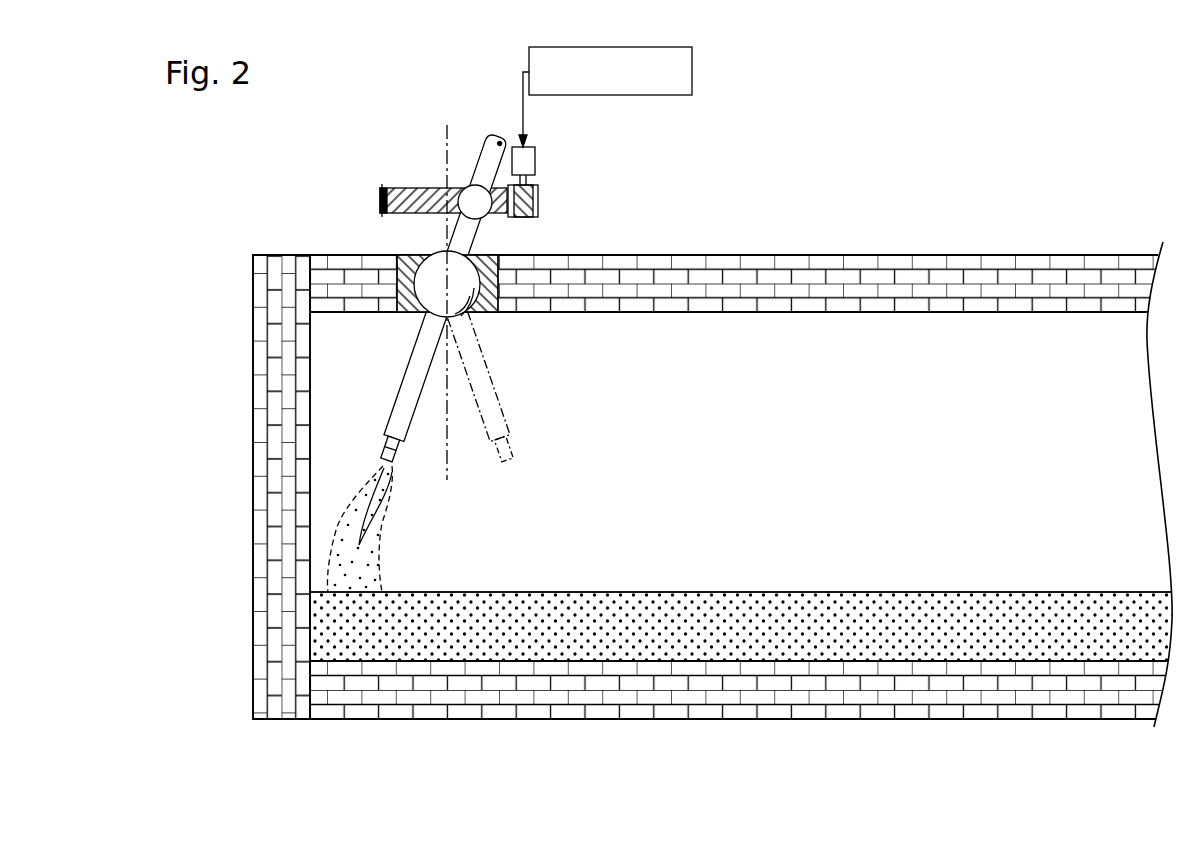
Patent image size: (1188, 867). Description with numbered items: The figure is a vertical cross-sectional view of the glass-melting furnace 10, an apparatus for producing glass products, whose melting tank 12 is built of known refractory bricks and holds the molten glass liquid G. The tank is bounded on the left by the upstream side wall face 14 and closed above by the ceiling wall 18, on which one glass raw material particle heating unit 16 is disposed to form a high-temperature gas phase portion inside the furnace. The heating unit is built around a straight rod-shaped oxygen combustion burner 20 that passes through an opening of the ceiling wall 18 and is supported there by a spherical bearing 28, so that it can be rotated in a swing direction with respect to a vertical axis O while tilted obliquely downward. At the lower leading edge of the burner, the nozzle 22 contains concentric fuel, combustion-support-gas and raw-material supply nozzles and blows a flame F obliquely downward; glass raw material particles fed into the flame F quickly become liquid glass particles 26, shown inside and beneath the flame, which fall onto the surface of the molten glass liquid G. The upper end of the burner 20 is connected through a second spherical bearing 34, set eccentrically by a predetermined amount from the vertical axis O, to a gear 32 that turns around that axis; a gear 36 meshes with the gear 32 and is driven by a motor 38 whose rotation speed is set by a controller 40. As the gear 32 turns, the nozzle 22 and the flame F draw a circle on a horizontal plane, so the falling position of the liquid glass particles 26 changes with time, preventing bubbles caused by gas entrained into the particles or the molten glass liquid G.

The glass-melting furnace 10 is at (714, 418).
The melting tank 12 is at (832, 248).
The upstream side wall face 14 is at (313, 403).
The glass raw material particle heating unit 16 is at (554, 279).
The ceiling wall 18 is at (565, 308).
The oxygen combustion burner 20 is at (415, 358).
The nozzle 22 is at (397, 450).
The liquid glass particles 26 is at (373, 472).
The spherical bearing 28 is at (477, 260).
The gear 32 is at (402, 187).
The spherical bearing 34 is at (473, 193).
The gear 36 is at (538, 197).
The motor 38 is at (537, 157).
The controller 40 is at (694, 72).
The vertical axis O is at (440, 142).
The flame F is at (393, 483).
The molten glass liquid G is at (785, 572).